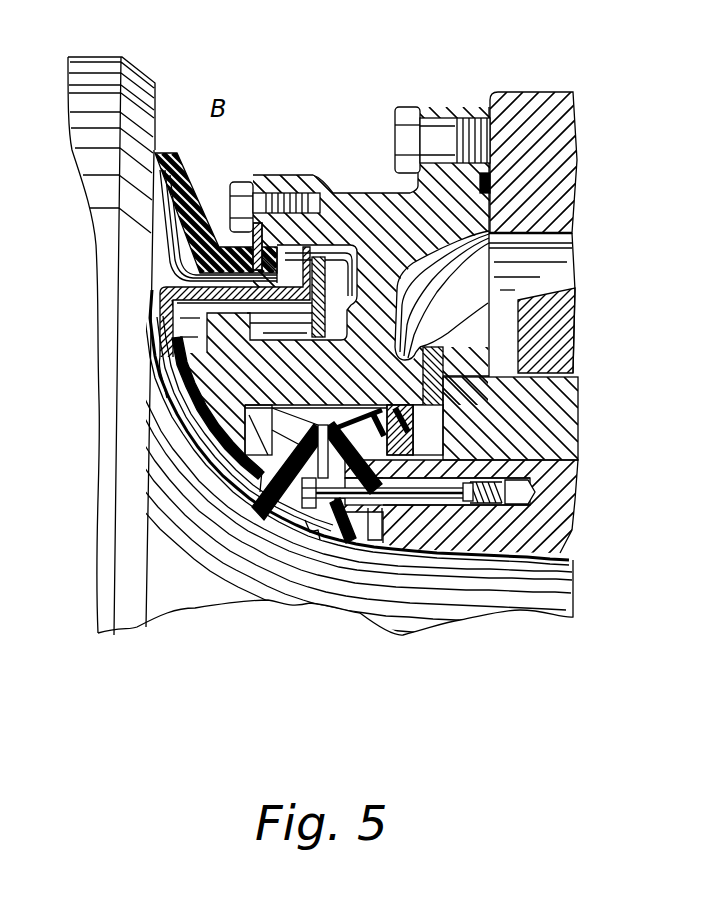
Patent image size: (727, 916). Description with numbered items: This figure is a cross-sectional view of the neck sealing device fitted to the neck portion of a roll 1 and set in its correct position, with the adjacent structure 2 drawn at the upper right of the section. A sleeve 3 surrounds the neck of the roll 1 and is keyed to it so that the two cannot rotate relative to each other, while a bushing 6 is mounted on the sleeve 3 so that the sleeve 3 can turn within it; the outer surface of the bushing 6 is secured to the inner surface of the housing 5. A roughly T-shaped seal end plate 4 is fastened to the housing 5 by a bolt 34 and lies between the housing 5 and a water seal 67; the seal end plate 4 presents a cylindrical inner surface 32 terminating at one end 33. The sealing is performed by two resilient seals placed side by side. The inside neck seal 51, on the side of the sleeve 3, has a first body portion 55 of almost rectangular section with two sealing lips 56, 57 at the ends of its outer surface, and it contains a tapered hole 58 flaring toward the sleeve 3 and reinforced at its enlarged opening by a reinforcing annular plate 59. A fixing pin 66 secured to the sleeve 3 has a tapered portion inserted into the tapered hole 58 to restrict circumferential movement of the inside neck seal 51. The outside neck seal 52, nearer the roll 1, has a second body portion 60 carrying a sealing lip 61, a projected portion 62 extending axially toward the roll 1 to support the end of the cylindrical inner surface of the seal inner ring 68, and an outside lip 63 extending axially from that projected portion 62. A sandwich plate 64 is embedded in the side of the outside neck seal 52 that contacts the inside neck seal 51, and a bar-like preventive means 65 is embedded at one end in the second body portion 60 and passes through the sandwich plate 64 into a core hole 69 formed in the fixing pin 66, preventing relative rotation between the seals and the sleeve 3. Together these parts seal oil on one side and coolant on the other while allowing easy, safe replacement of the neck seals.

The roll 1 is at (97, 52).
The axle housing 2 is at (525, 88).
The sleeve 3 is at (487, 506).
The seal end plate 4 is at (265, 288).
The housing 5 is at (511, 260).
The bushing 6 is at (538, 416).
The cylindrical inner surface 32 is at (178, 424).
The end of the cylindrical inner surface 33 is at (179, 420).
The bolt 34 is at (442, 101).
The inside neck seal 51 is at (381, 697).
The outside neck seal 52 is at (263, 697).
The first body portion 55 is at (365, 553).
The sealing lip 56 is at (541, 310).
The sealing lip 57 is at (525, 369).
The tapered hole 58 is at (376, 598).
The reinforcing annular plate 59 is at (511, 392).
The second body portion 60 is at (260, 551).
The sealing lip 61 is at (143, 427).
The projected portion 62 is at (212, 564).
The outside lip 63 is at (144, 527).
The sandwich plate 64 is at (306, 561).
The preventive means 65 is at (466, 590).
The fixing pin 66 is at (499, 589).
The water seal 67 is at (156, 217).
The seal inner ring 68 is at (194, 301).
The core hole 69 is at (431, 593).